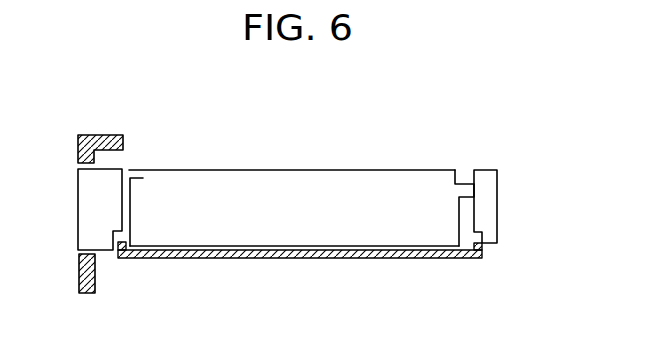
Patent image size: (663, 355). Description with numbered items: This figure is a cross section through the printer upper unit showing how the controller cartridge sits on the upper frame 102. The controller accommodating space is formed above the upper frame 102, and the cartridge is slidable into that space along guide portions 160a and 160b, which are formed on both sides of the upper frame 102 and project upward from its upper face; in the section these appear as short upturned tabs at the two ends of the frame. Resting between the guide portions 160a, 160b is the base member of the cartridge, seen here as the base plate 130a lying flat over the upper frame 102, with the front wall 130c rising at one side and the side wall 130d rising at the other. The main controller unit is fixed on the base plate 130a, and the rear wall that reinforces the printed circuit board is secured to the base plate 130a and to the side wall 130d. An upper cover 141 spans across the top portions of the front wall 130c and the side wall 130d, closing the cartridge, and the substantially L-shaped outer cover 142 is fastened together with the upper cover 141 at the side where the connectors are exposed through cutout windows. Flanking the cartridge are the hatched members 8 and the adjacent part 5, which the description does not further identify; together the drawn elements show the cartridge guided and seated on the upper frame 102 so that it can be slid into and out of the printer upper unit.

The housing frame 5 is at (80, 209).
The guide members 8 is at (113, 135).
The upper frame 102 is at (310, 260).
The base plate 130a is at (307, 246).
The front wall 130c is at (131, 213).
The side wall 130d is at (457, 218).
The upper cover 141 is at (350, 168).
The outer cover 142 is at (493, 200).
The guide portion 160a is at (483, 263).
The guide portion 160b is at (121, 264).